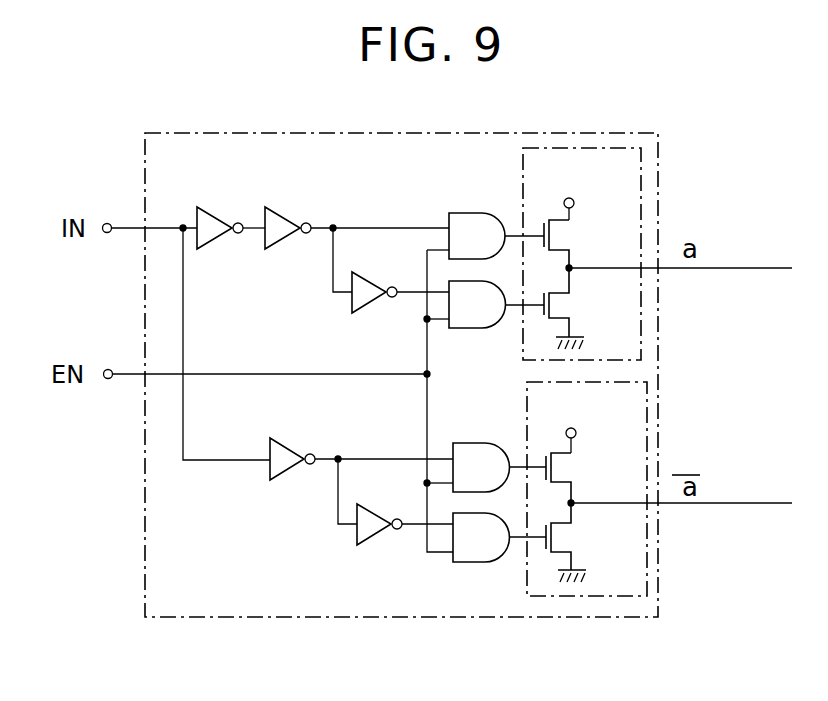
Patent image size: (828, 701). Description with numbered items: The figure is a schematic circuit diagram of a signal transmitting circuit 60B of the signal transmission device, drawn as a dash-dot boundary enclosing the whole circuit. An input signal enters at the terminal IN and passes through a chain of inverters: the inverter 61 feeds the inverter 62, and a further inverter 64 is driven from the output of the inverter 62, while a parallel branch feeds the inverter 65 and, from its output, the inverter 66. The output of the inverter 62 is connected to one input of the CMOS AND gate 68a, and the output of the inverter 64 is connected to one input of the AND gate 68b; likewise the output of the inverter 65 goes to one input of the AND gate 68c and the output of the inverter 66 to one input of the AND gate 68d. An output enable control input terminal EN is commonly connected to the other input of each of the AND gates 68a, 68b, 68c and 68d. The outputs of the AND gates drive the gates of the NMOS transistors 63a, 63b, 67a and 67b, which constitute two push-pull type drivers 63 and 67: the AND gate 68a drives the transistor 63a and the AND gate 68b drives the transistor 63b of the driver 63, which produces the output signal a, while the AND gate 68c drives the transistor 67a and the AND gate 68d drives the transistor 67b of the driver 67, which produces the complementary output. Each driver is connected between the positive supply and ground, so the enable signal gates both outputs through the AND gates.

The signal transmitting circuit 60B is at (633, 617).
The inverter 61 is at (222, 207).
The inverter 62 is at (296, 215).
The inverter 64 is at (365, 312).
The inverter 65 is at (296, 443).
The inverter 66 is at (357, 546).
The CMOS AND gate 68a is at (468, 213).
The CMOS AND gate 68b is at (468, 329).
The CMOS AND gate 68c is at (468, 443).
The CMOS AND gate 68d is at (473, 563).
The push-pull type driver 63 is at (616, 231).
The NMOS transistor 63a is at (555, 238).
The NMOS transistor 63b is at (555, 307).
The push-pull type driver 67 is at (618, 489).
The NMOS transistor 67a is at (557, 470).
The NMOS transistor 67b is at (557, 539).